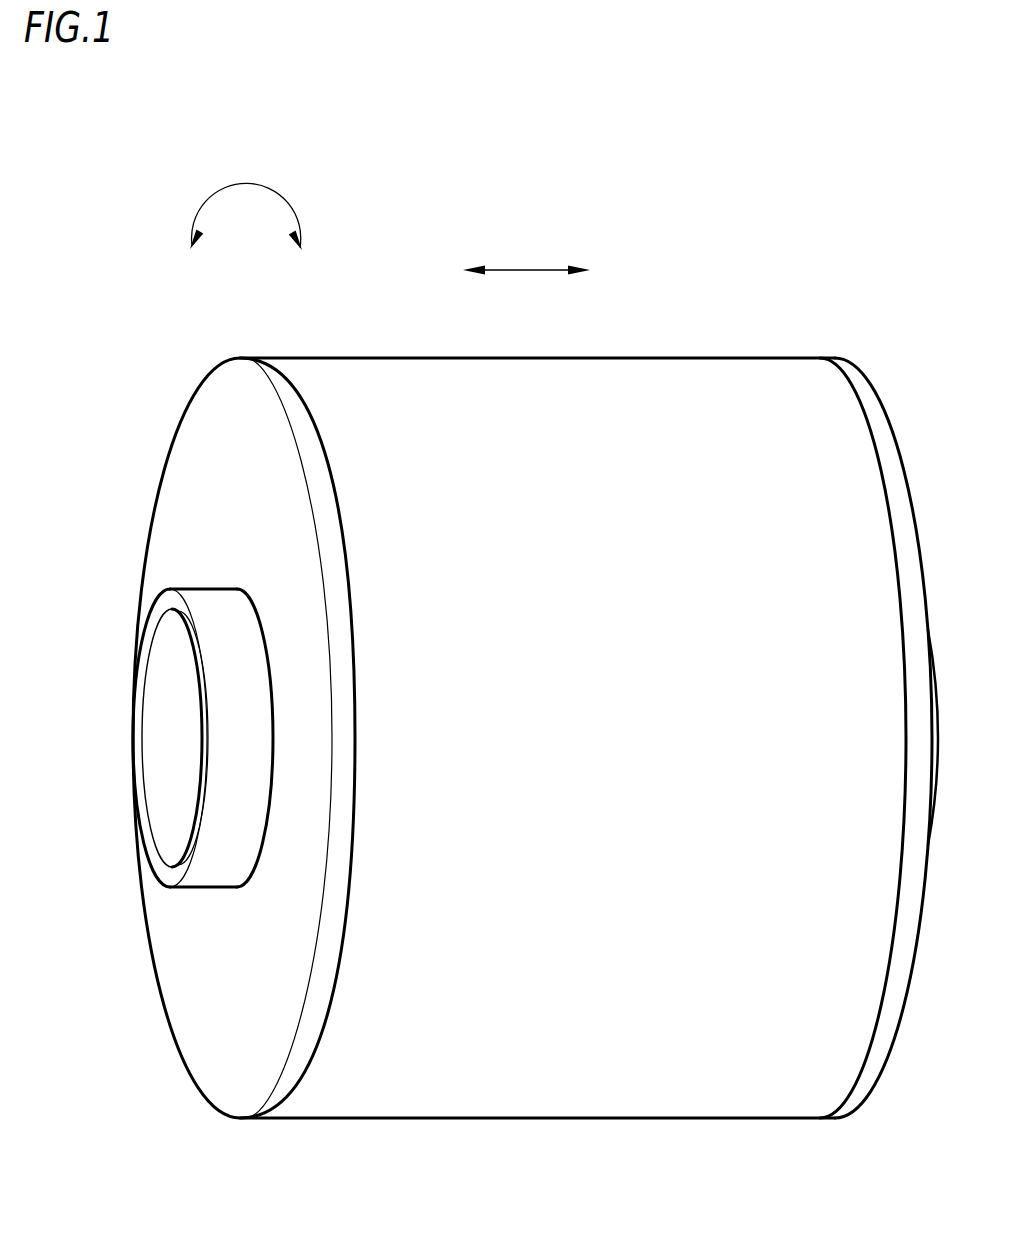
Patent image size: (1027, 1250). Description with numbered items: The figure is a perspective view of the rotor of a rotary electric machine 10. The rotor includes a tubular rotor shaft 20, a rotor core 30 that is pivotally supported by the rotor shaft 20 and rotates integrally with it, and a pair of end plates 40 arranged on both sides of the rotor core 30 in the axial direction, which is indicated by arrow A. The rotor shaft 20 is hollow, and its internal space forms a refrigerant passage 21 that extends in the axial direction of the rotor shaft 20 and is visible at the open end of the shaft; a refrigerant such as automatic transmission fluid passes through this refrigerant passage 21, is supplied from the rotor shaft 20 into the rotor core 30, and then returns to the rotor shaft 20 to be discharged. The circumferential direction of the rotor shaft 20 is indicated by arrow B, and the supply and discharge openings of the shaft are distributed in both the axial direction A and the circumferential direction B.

The rotary electric machine 10 is at (482, 595).
The rotor shaft 20 is at (150, 790).
The refrigerant passage 21 is at (117, 738).
The rotor core 30 is at (591, 357).
The end plates 40 is at (252, 357).
The axial direction A is at (525, 268).
The circumferential direction B is at (243, 180).